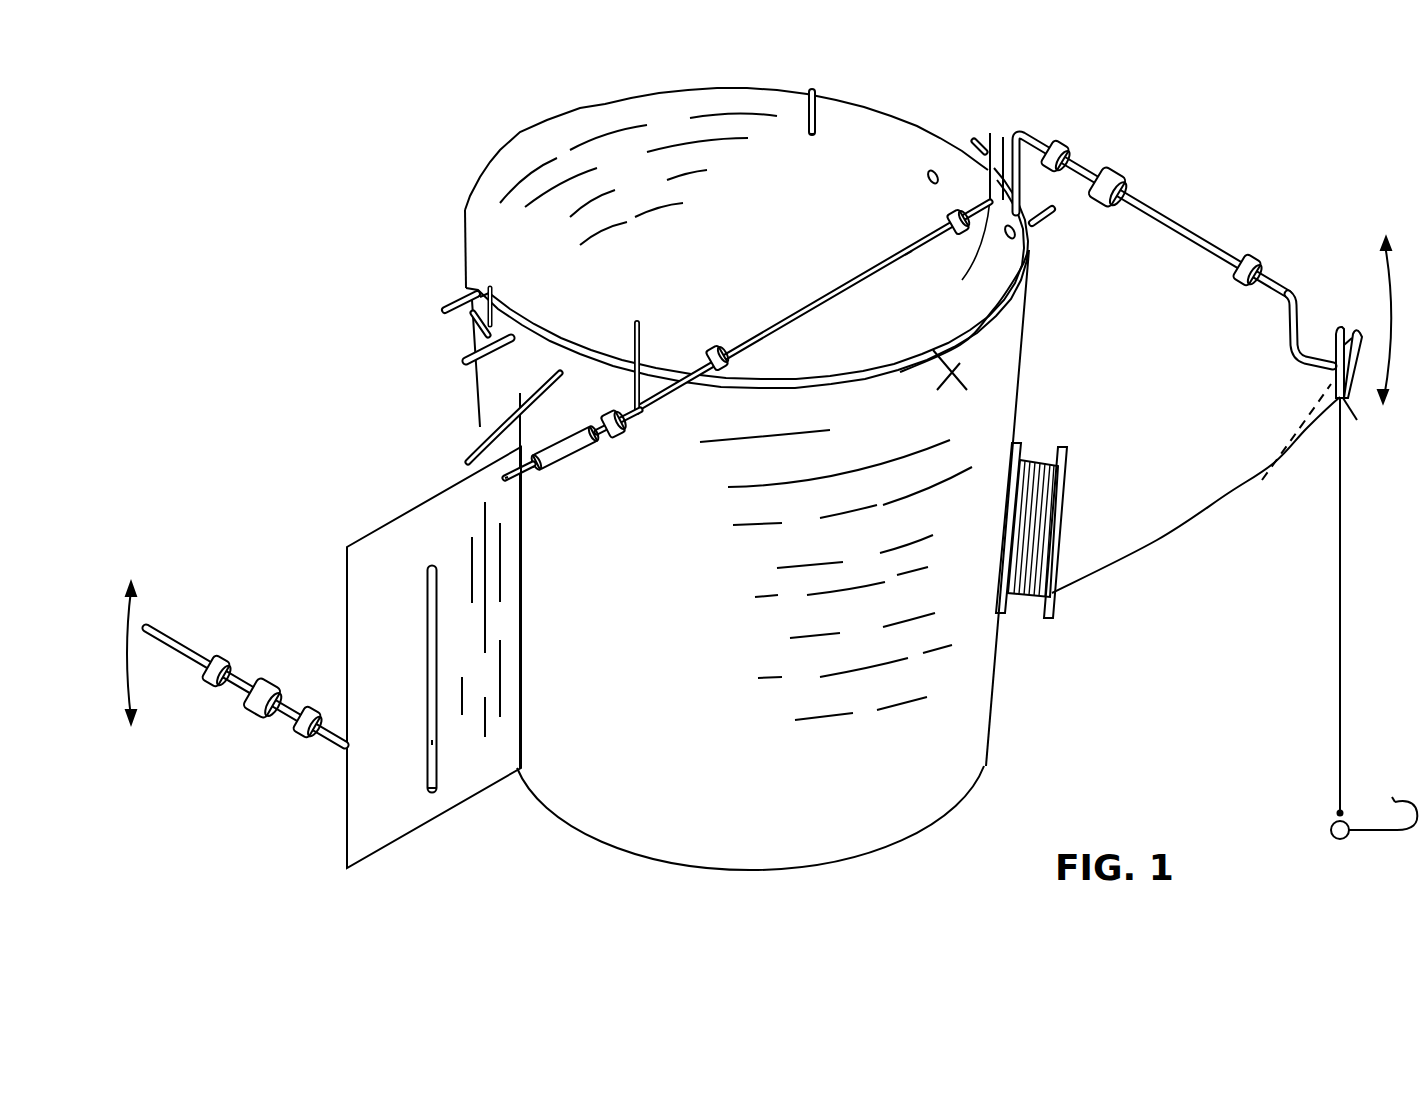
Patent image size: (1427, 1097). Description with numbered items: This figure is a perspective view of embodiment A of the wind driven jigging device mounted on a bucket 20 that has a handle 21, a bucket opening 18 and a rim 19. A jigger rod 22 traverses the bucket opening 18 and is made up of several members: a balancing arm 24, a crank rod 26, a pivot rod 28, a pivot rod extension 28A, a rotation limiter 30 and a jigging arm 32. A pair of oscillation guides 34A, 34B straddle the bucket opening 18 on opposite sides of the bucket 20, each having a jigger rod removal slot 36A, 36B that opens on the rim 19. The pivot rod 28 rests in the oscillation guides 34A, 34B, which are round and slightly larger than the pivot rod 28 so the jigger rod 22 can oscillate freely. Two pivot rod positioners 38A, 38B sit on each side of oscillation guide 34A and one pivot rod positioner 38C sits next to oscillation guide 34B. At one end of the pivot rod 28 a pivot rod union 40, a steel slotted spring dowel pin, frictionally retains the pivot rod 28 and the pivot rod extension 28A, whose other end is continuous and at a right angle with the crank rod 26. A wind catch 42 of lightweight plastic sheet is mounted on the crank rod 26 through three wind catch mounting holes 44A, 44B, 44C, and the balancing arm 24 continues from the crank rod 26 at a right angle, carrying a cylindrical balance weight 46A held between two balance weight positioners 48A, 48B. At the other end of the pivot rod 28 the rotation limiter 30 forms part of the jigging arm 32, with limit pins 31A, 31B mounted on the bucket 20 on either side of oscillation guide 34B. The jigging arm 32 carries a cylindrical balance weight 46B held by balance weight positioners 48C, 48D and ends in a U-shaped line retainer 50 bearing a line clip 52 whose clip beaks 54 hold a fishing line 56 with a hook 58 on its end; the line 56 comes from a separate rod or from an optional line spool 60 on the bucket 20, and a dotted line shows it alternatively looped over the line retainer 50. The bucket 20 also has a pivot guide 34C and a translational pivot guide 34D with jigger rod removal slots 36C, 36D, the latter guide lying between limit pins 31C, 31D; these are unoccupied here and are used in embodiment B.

The bucket opening 18 is at (709, 253).
The rim 19 is at (1002, 307).
The bucket 20 is at (746, 639).
The handle 21 is at (466, 460).
The jigger rod 22 is at (812, 302).
The balancing arm 24 is at (178, 645).
The crank rod 26 is at (437, 740).
The pivot rod 28 is at (905, 257).
The pivot rod extension 28A is at (532, 475).
The rotation limiter 30 is at (1004, 150).
The limit pin 31A is at (973, 141).
The limit pin 31B is at (1048, 215).
The limit pin 31C is at (478, 340).
The limit pin 31D is at (455, 300).
The jigging arm 32 is at (1165, 215).
The oscillation guide 34A is at (650, 425).
The oscillation guide 34B is at (955, 255).
The pivot guide 34C is at (808, 118).
The translational pivot guide 34D is at (462, 357).
The jigger rod removal slot 36A is at (636, 345).
The jigger rod removal slot 36B is at (990, 133).
The jigger rod removal slot 36C is at (811, 92).
The jigger rod removal slot 36D is at (482, 286).
The pivot rod positioner 38A is at (613, 440).
The pivot rod positioner 38B is at (710, 347).
The pivot rod positioner 38C is at (950, 216).
The pivot rod union 40 is at (560, 465).
The wind catch 42 is at (406, 692).
The wind catch mounting hole 44A is at (503, 482).
The wind catch mounting hole 44B is at (426, 568).
The wind catch mounting hole 44C is at (430, 790).
The balance weight 46A is at (264, 682).
The balance weight 46B is at (1112, 176).
The balance weight positioner 48A is at (213, 684).
The balance weight positioner 48B is at (300, 737).
The balance weight positioner 48C is at (1062, 146).
The balance weight positioner 48D is at (1250, 258).
The line retainer 50 is at (1300, 358).
The line clip 52 is at (1354, 330).
The clip beaks 54 is at (1348, 404).
The fishing line 56 is at (1338, 601).
The hook 58 is at (1372, 835).
The line spool 60 is at (1057, 537).